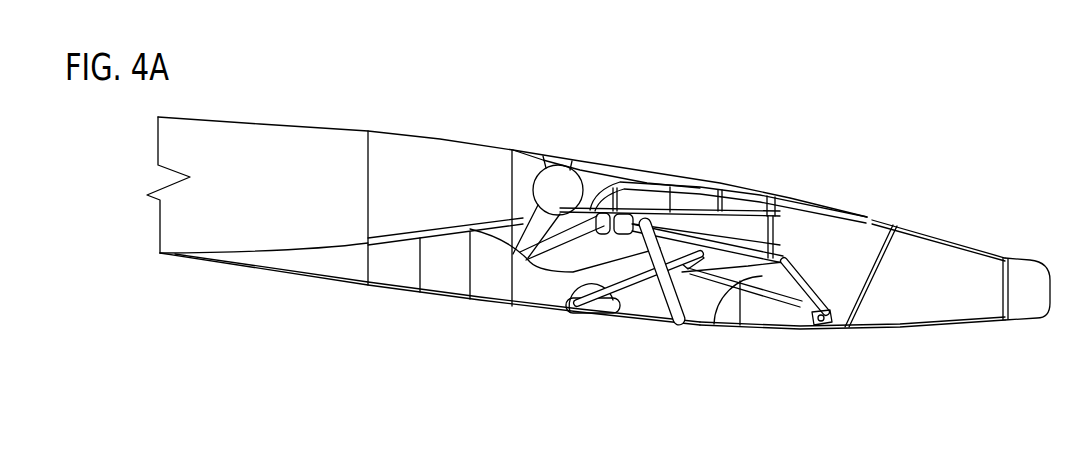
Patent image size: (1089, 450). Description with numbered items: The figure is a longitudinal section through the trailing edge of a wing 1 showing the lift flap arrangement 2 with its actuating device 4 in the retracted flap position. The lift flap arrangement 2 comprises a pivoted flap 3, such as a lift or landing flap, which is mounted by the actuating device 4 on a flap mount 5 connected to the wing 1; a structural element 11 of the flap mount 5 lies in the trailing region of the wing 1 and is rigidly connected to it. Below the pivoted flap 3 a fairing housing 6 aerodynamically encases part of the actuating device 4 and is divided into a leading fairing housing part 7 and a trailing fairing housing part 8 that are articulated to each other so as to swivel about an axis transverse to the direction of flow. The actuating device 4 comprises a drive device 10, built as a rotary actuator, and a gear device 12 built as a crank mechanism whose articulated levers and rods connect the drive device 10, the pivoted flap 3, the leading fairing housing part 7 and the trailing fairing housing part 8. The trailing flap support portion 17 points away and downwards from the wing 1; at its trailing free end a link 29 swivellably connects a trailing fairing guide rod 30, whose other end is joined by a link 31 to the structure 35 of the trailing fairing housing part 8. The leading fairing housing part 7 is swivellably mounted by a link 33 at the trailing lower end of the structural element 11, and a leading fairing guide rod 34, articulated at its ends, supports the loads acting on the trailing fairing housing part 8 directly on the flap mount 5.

The wing 1 is at (352, 130).
The lift flap arrangement 2 is at (707, 157).
The pivoted flap 3 is at (747, 188).
The actuating device 4 is at (693, 287).
The flap mount 5 is at (405, 296).
The fairing housing 6 is at (979, 245).
The leading fairing housing part 7 is at (670, 324).
The trailing fairing housing part 8 is at (903, 329).
The drive device 10 is at (558, 180).
The structural element 11 is at (480, 302).
The gear device 12 is at (624, 324).
The trailing flap support portion 17 is at (718, 247).
The link 29 is at (784, 259).
The trailing fairing guide rod 30 is at (812, 295).
The link 31 is at (826, 321).
The link 33 is at (577, 300).
The leading fairing guide rod 34 is at (652, 284).
The structure 35 is at (780, 291).